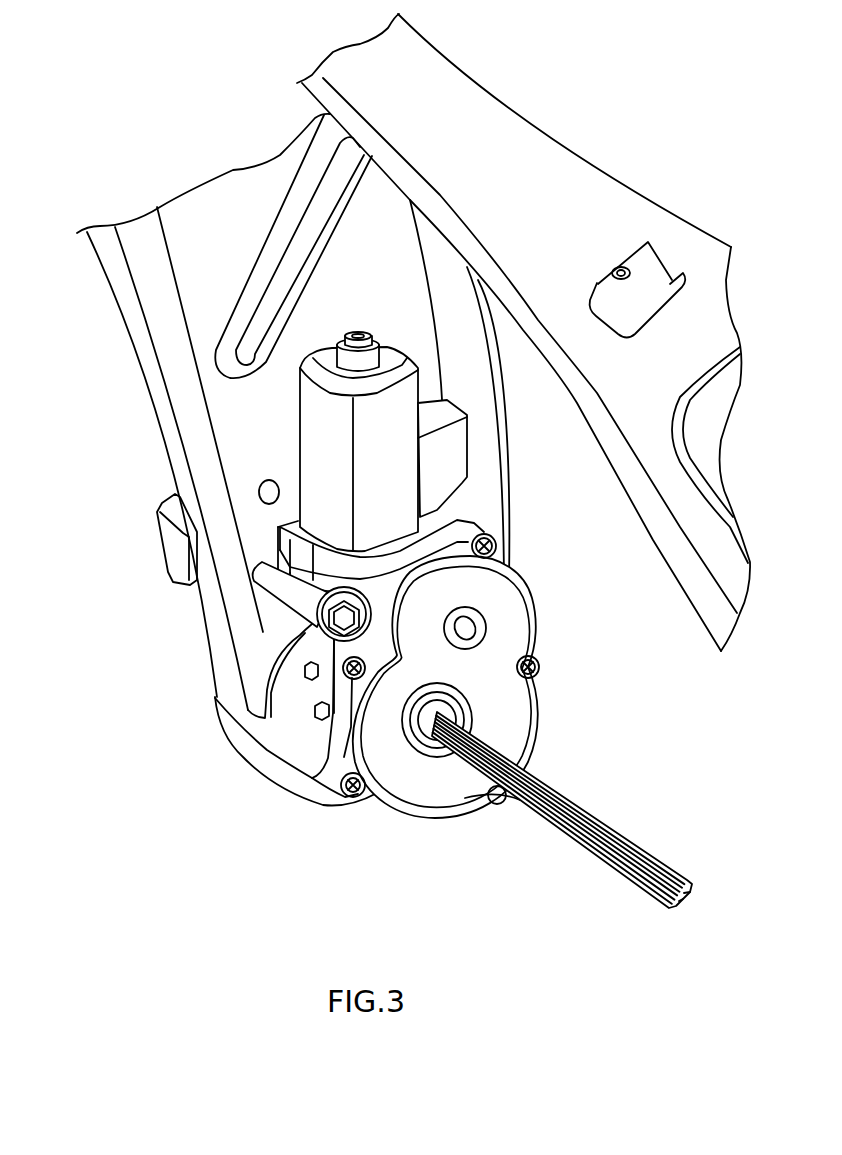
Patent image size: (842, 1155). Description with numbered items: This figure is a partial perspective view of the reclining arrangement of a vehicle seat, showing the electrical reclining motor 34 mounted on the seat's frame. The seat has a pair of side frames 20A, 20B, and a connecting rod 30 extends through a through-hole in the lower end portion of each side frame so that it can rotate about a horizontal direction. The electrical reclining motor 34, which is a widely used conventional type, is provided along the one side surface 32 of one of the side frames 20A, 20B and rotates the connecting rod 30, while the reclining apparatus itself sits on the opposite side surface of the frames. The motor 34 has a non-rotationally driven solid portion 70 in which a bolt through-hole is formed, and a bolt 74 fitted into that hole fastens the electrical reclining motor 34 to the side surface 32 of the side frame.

The side frame 20A is at (527, 154).
The side frame 20B is at (242, 455).
The side surface 32 is at (193, 273).
The electrical reclining motor 34 is at (318, 445).
The non-rotationally driven solid portion 70 is at (280, 597).
The bolt 74 is at (355, 632).
The connecting rod 30 is at (604, 818).